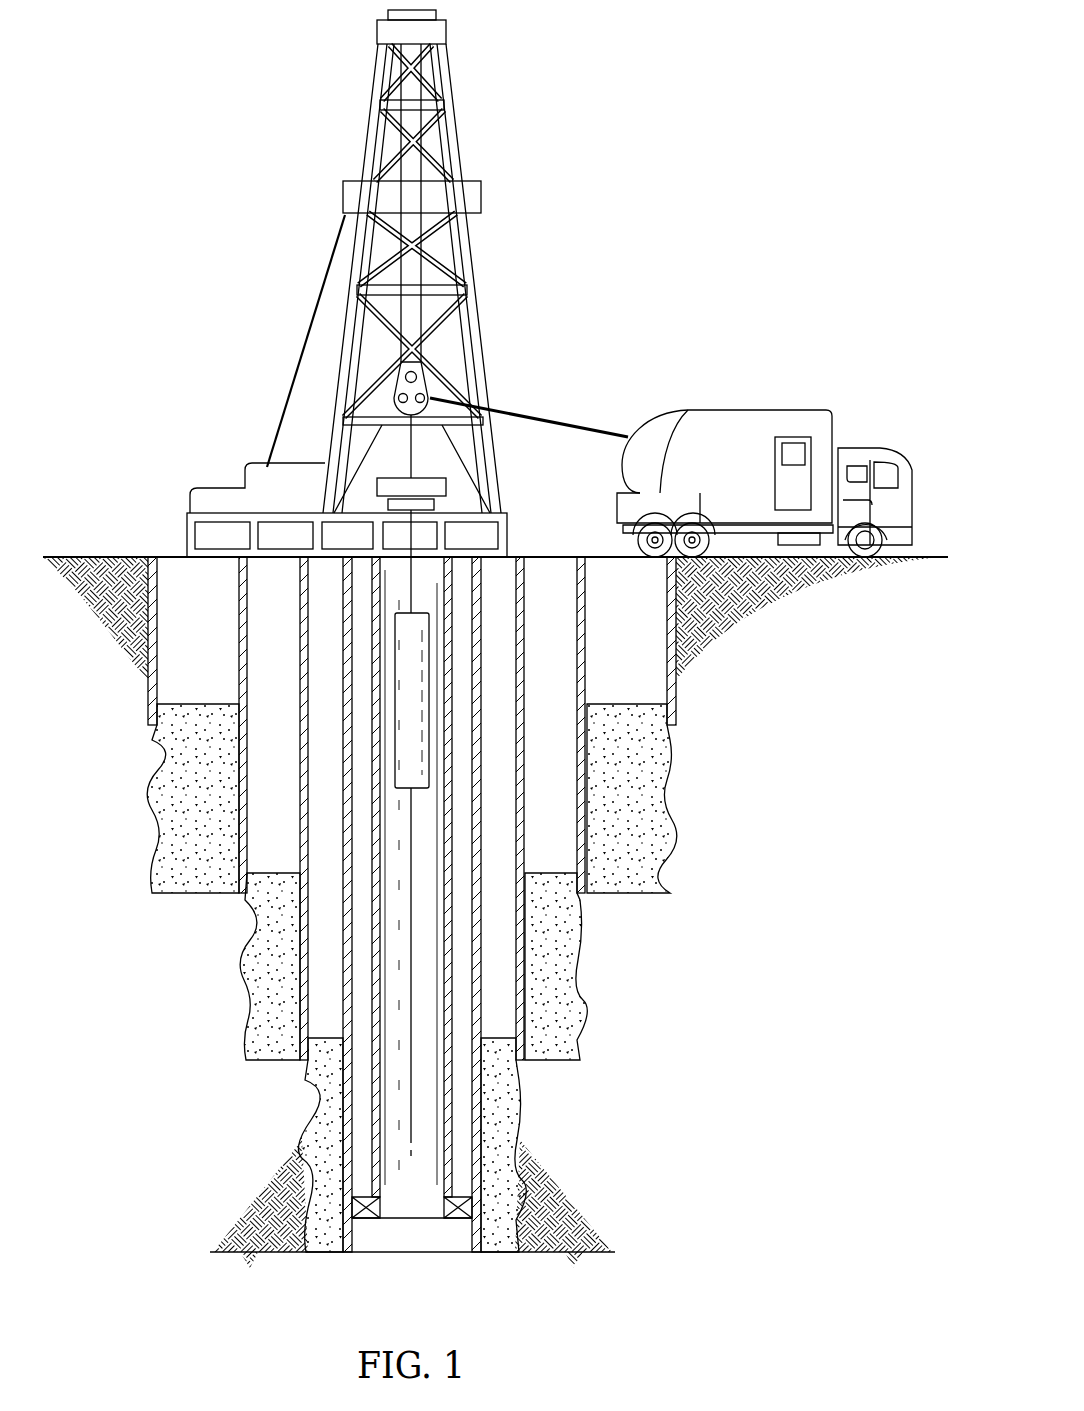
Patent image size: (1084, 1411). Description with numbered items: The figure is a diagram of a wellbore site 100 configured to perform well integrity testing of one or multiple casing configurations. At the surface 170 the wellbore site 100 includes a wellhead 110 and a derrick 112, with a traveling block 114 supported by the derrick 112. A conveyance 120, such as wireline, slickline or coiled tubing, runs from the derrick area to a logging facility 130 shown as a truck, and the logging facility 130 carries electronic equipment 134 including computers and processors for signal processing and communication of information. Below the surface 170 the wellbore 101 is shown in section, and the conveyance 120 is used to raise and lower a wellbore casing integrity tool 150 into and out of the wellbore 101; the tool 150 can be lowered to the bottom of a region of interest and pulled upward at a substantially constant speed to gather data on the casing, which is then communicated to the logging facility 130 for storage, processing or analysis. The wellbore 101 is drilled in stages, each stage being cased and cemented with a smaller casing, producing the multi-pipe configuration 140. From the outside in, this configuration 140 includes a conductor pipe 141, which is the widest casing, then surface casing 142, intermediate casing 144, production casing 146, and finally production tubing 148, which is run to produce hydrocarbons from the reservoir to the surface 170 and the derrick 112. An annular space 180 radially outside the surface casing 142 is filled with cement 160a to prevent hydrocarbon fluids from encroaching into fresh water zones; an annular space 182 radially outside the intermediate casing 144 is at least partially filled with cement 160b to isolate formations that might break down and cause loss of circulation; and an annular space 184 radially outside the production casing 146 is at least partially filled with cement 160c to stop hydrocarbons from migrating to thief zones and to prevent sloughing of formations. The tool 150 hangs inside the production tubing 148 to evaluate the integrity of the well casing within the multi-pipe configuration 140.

The wellbore site 100 is at (672, 80).
The wellbore 101 is at (477, 1288).
The wellhead 110 is at (437, 474).
The derrick 112 is at (481, 313).
The traveling block 114 is at (398, 388).
The conveyance 120 is at (597, 428).
The logging facility 130 is at (764, 454).
The electronic equipment 134 is at (793, 440).
The multi-pipe configuration 140 is at (718, 960).
The conductor pipe 141 is at (150, 717).
The surface casing 142 is at (242, 882).
The intermediate casing 144 is at (300, 1060).
The production casing 146 is at (347, 1247).
The production tubing 148 is at (436, 1217).
The wellbore casing integrity tool 150 is at (415, 783).
The cement 160a is at (660, 802).
The cement 160b is at (578, 973).
The cement 160c is at (513, 1188).
The surface 170 is at (930, 557).
The annular space 180 is at (217, 651).
The annular space 182 is at (258, 797).
The annular space 184 is at (320, 994).